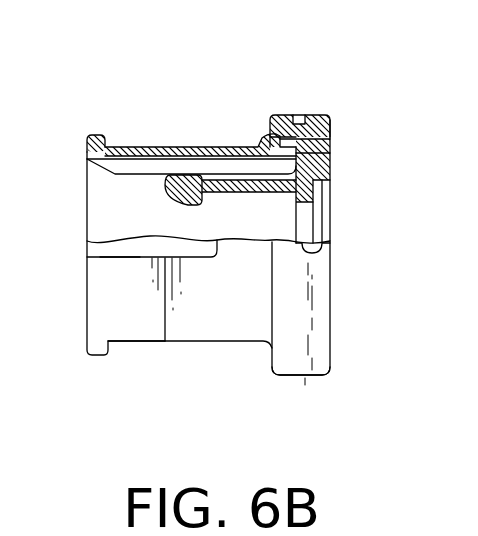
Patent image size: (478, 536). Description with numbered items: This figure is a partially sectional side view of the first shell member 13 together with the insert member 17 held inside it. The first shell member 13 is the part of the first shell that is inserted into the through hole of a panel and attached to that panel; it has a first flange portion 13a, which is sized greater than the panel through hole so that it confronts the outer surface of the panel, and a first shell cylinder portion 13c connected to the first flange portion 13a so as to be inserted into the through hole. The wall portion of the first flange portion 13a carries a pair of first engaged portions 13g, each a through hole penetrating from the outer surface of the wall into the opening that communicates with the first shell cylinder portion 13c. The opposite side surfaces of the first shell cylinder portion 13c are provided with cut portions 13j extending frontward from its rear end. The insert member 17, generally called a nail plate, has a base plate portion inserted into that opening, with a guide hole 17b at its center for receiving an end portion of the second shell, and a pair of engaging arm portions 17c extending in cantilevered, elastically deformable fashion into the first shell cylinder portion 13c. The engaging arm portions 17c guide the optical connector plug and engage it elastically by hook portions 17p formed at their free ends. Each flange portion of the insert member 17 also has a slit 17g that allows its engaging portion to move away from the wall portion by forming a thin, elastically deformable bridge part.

The first shell member 13 is at (303, 80).
The first flange portion 13a is at (310, 363).
The first shell cylinder portion 13c is at (132, 325).
The first engaged portion 13g is at (300, 117).
The cut portion 13j is at (128, 258).
The insert member 17 is at (331, 163).
The guide hole 17b is at (331, 221).
The engaging arm portion 17c is at (228, 181).
The slit 17g is at (331, 140).
The hook portion 17p is at (177, 181).